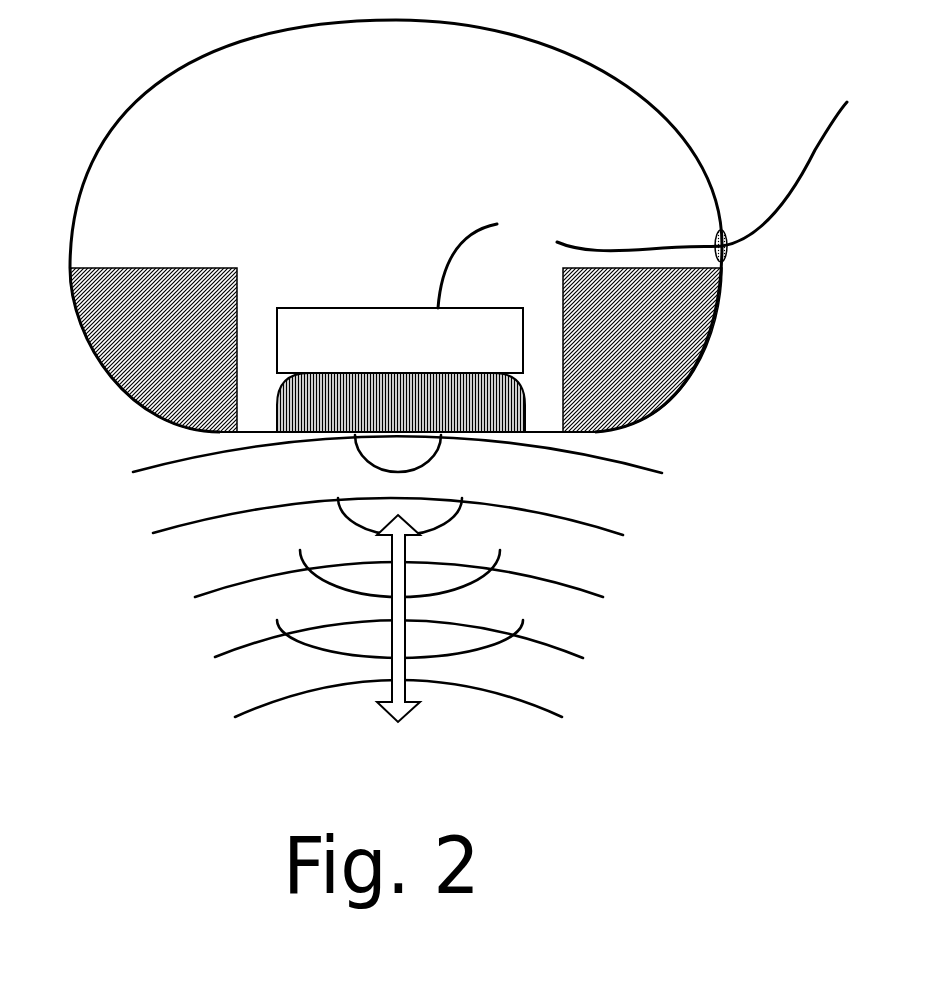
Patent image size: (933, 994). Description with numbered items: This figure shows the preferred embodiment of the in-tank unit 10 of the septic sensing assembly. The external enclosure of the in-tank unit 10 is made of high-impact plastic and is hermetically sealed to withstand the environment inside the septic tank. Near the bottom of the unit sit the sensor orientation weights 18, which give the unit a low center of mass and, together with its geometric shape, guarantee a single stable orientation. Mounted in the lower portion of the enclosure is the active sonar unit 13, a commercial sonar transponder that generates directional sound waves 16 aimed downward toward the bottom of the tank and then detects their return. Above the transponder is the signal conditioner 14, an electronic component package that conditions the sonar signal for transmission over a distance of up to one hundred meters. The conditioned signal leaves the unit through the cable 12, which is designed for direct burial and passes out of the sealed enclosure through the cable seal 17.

The in-tank unit 10 is at (622, 83).
The cable 12 is at (494, 259).
The active sonar unit 13 is at (401, 402).
The signal conditioner 14 is at (400, 340).
The sound waves 16 is at (397, 578).
The cable seal 17 is at (729, 257).
The sensor orientation weights 18 is at (396, 350).